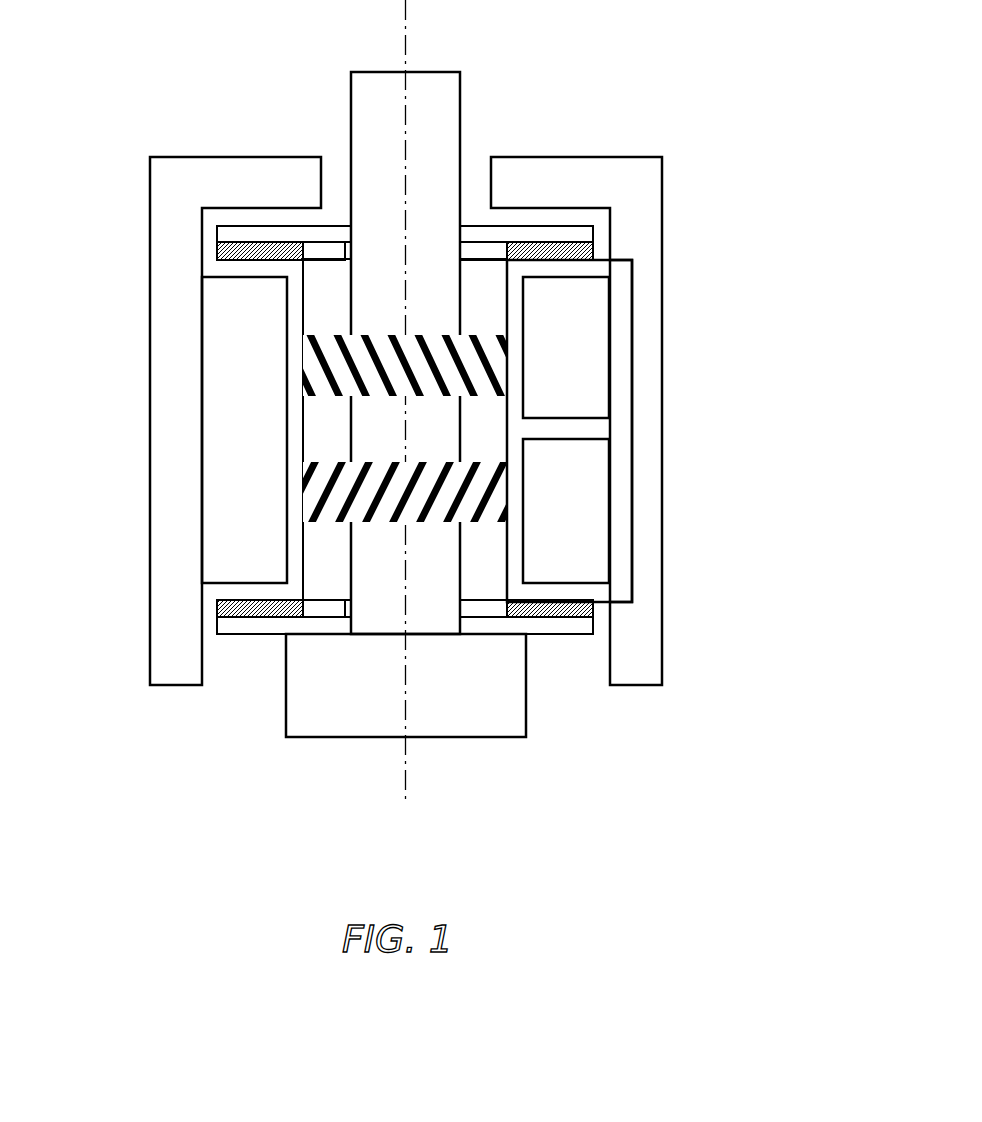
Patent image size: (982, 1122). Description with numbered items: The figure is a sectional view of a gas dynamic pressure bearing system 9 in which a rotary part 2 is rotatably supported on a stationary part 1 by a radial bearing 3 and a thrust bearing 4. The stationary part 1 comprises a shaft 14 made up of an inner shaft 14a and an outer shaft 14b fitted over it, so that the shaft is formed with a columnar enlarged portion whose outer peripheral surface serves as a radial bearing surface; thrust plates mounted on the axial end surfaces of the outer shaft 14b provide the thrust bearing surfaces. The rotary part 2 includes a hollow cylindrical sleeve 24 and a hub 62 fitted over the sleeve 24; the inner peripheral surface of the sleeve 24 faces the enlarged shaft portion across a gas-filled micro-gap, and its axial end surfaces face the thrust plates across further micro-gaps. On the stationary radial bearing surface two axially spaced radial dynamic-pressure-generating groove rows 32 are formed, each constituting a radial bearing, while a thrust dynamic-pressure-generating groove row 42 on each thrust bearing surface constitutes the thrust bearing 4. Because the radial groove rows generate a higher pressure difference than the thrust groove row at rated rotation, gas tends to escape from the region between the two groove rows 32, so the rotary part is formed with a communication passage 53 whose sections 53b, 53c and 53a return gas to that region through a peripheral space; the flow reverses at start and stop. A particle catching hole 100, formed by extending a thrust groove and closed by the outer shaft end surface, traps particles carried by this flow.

The stationary part 1 is at (322, 131).
The rotary part 2 is at (212, 130).
The radial bearing 3 is at (282, 306).
The thrust bearing 4 is at (222, 204).
The gas dynamic pressure bearing system 9 is at (336, 72).
The shaft 14 is at (647, 120).
The inner shaft 14a is at (417, 85).
The outer shaft 14b is at (480, 285).
The sleeve 24 is at (245, 342).
The radial dynamic-pressure-generating groove row 32 is at (325, 392).
The thrust dynamic-pressure-generating groove row 42 is at (550, 243).
The communication passage 53 is at (807, 605).
The communication passage 53a is at (532, 428).
The communication passage 53b is at (620, 268).
The communication passage 53c is at (617, 428).
The hub 62 is at (174, 592).
The particle catching hole 100 is at (495, 249).